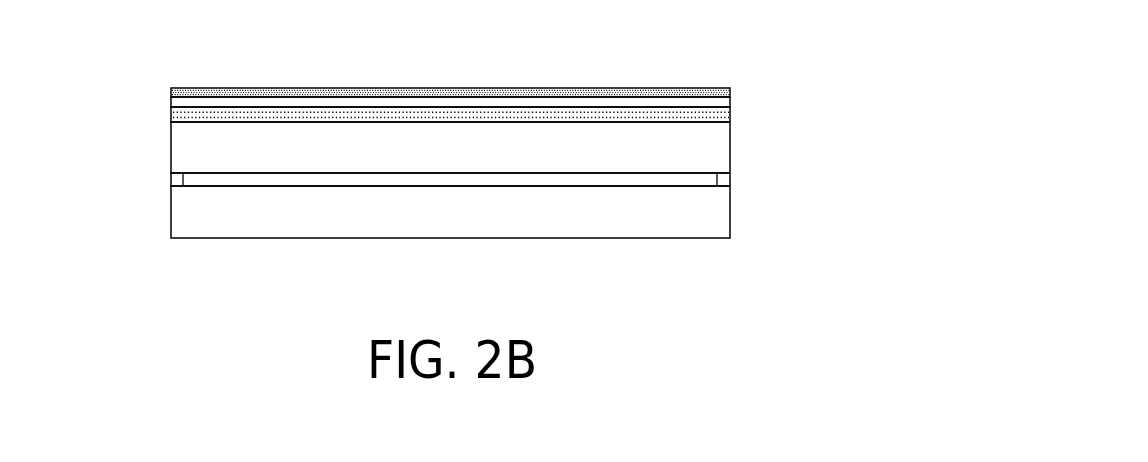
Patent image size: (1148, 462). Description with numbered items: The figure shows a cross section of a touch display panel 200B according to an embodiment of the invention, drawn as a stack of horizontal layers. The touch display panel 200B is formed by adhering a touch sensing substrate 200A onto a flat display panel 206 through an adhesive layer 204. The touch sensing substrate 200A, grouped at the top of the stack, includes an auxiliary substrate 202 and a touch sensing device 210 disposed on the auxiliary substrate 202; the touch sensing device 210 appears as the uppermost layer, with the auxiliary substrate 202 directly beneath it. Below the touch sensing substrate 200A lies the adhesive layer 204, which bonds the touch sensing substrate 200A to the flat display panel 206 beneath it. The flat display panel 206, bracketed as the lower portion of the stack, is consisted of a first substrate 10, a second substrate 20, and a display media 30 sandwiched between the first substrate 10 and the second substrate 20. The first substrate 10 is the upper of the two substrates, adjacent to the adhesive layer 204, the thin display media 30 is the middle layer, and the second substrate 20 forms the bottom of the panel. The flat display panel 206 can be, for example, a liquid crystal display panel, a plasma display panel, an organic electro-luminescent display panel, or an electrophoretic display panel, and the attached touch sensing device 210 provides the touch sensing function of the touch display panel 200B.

The first substrate 10 is at (188, 145).
The second substrate 20 is at (187, 223).
The display media 30 is at (198, 182).
The touch sensing substrate 200A is at (821, 42).
The touch display panel 200B is at (792, 289).
The auxiliary substrate 202 is at (731, 102).
The adhesive layer 204 is at (731, 121).
The flat display panel 206 is at (734, 123).
The touch sensing device 210 is at (729, 91).